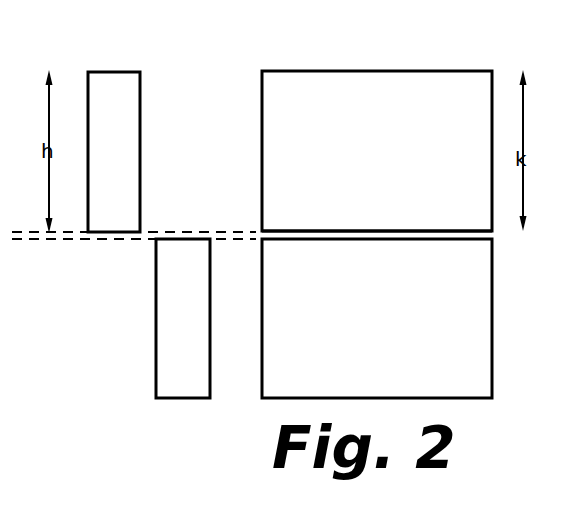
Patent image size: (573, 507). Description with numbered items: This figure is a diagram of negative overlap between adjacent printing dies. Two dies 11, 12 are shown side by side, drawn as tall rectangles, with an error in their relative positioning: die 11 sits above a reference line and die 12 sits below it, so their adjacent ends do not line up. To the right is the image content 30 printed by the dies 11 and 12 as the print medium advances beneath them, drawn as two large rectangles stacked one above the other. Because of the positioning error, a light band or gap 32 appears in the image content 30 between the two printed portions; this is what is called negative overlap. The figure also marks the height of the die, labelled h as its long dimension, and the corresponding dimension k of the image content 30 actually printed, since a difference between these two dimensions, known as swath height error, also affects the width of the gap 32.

The printing die 11 is at (118, 133).
The printing die 12 is at (175, 324).
The image content 30 is at (499, 67).
The light band or gap 32 is at (284, 232).